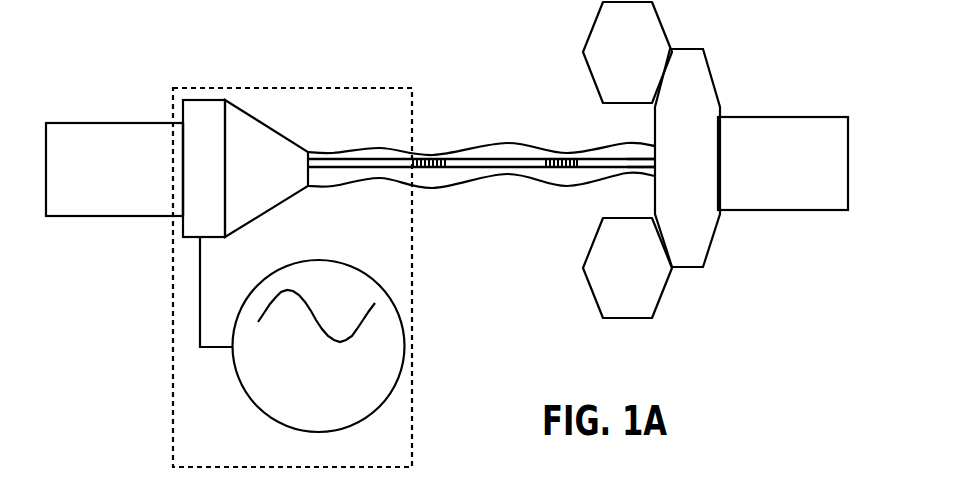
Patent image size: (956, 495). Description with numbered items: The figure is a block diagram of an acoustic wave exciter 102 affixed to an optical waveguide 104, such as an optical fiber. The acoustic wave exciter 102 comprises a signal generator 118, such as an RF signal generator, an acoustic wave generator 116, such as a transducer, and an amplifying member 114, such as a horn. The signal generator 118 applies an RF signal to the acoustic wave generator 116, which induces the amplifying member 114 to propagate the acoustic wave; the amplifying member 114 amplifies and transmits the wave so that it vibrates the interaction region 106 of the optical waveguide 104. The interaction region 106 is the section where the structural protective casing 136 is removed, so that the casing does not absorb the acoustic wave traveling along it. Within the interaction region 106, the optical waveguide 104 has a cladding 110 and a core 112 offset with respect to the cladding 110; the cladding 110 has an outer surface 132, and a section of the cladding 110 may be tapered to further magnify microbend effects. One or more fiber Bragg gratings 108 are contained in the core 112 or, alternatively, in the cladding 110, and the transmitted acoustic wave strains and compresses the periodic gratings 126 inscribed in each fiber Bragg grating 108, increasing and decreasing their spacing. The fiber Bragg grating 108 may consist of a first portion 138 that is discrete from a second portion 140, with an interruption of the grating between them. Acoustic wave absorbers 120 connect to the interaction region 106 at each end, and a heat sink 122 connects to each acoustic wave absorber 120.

The acoustic wave exciter 102 is at (292, 277).
The optical waveguide 104 is at (447, 166).
The interaction region 106 is at (481, 152).
The fiber Bragg grating 108 is at (481, 131).
The cladding 110 is at (481, 207).
The core 112 is at (481, 193).
The amplifying member 114 is at (267, 168).
The acoustic wave generator 116 is at (208, 196).
The signal generator 118 is at (319, 346).
The acoustic wave absorber 120 is at (687, 158).
The heat sink 122 is at (627, 160).
The periodic gratings 126 is at (563, 195).
The outer surface 132 is at (481, 133).
The structural protective casing 136 is at (457, 144).
The first portion 138 is at (461, 190).
The second portion 140 is at (624, 183).